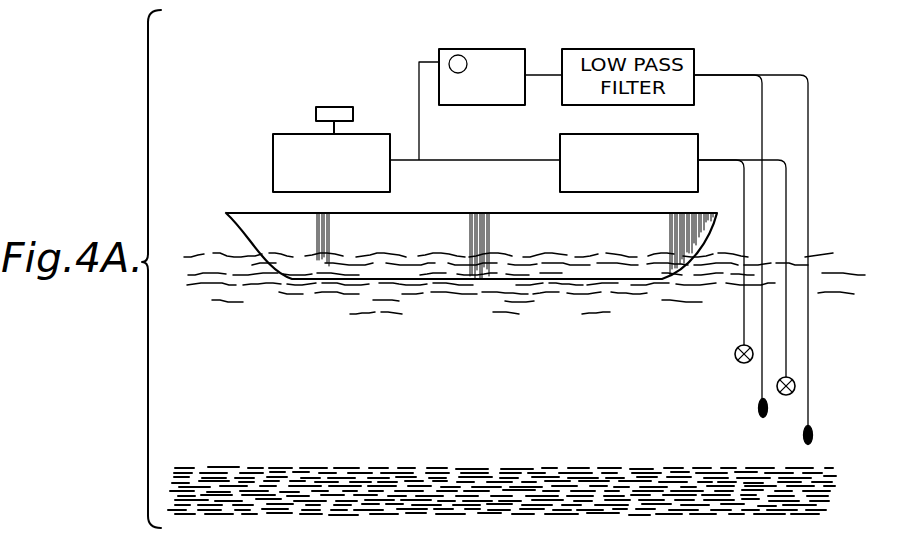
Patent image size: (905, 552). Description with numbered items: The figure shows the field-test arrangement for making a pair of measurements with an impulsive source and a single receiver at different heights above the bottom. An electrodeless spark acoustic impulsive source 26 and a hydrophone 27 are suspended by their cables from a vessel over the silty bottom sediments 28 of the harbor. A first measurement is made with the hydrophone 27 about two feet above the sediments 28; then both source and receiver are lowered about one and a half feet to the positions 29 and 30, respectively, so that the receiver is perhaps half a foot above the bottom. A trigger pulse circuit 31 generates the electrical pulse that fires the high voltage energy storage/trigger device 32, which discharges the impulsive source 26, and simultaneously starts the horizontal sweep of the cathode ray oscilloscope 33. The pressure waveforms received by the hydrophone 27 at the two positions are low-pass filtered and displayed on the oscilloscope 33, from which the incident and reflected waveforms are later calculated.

The electrodeless spark acoustic impulsive source 26 is at (735, 353).
The hydrophone 27 is at (758, 407).
The sediments 28 is at (502, 491).
The lowered position of impulsive source 29 is at (796, 383).
The lowered position of hydrophone 30 is at (813, 428).
The trigger pulse circuit 31 is at (273, 154).
The high voltage energy storage/trigger device 32 is at (690, 132).
The cathode ray oscilloscope 33 is at (467, 105).